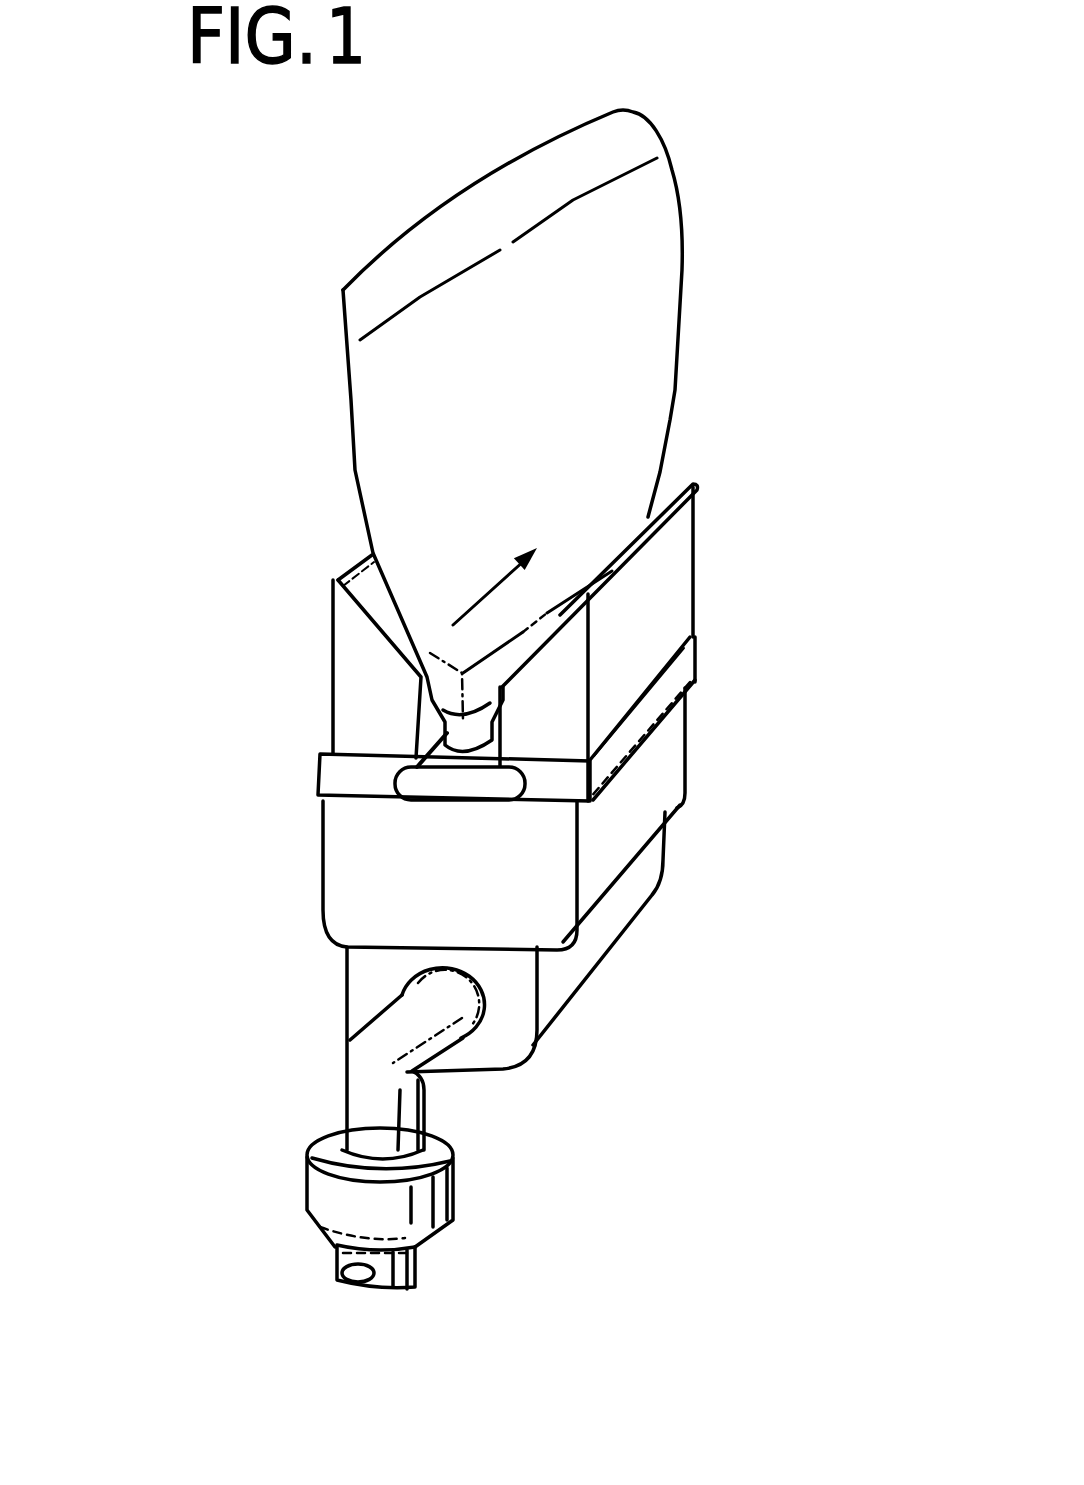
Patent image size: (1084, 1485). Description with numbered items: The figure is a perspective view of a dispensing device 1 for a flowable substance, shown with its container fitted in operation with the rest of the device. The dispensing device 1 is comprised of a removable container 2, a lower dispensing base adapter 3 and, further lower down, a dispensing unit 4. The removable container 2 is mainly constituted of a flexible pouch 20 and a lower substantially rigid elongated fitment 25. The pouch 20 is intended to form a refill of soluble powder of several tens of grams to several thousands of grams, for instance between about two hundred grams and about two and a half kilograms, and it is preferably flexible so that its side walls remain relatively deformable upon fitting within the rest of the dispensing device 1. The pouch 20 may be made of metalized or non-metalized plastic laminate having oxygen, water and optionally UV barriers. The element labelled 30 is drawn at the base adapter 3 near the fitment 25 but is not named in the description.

The dispensing device 1 is at (235, 328).
The removable container 2 is at (713, 247).
The flexible pouch 20 is at (643, 393).
The lower substantially rigid elongated fitment 25 is at (500, 726).
The lower dispensing base adapter 3 is at (575, 816).
The slot coupling 30 is at (400, 783).
The dispensing unit 4 is at (423, 1287).